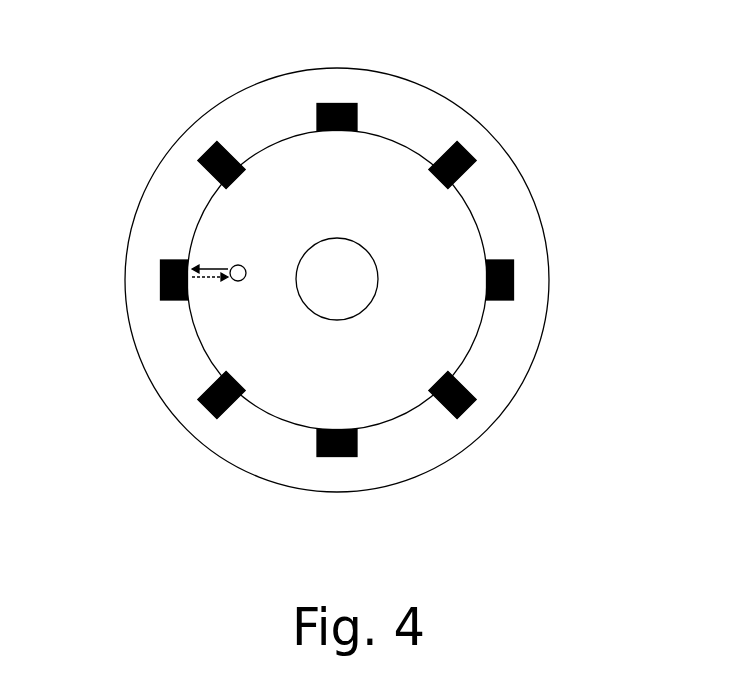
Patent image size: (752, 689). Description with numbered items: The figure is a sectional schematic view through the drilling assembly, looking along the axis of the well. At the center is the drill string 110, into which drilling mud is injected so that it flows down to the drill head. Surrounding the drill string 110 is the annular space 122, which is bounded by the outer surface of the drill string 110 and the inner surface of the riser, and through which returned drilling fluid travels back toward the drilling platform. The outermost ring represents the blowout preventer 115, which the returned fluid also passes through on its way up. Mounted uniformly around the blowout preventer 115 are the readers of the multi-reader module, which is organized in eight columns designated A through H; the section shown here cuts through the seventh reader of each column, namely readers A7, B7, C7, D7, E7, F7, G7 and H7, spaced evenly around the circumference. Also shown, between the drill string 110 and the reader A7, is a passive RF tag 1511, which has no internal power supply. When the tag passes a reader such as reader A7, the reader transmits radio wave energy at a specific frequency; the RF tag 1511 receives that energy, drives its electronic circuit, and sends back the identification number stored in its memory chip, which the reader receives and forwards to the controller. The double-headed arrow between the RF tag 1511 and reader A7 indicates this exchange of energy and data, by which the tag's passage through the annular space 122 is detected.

The drill string 110 is at (350, 273).
The blowout preventer 115 is at (515, 357).
The annular space 122 is at (452, 230).
The passive RF tag 1511 is at (242, 265).
The reader A7 is at (165, 262).
The reader B7 is at (212, 403).
The reader C7 is at (343, 458).
The reader D7 is at (462, 404).
The reader E7 is at (510, 275).
The reader F7 is at (463, 160).
The reader G7 is at (338, 107).
The reader H7 is at (206, 156).